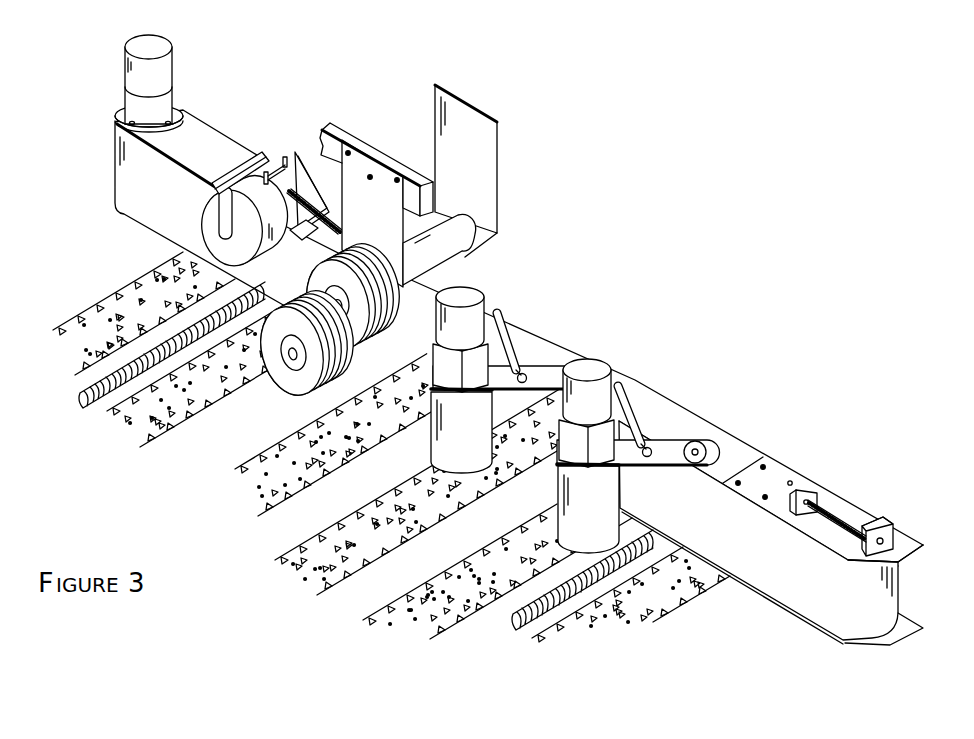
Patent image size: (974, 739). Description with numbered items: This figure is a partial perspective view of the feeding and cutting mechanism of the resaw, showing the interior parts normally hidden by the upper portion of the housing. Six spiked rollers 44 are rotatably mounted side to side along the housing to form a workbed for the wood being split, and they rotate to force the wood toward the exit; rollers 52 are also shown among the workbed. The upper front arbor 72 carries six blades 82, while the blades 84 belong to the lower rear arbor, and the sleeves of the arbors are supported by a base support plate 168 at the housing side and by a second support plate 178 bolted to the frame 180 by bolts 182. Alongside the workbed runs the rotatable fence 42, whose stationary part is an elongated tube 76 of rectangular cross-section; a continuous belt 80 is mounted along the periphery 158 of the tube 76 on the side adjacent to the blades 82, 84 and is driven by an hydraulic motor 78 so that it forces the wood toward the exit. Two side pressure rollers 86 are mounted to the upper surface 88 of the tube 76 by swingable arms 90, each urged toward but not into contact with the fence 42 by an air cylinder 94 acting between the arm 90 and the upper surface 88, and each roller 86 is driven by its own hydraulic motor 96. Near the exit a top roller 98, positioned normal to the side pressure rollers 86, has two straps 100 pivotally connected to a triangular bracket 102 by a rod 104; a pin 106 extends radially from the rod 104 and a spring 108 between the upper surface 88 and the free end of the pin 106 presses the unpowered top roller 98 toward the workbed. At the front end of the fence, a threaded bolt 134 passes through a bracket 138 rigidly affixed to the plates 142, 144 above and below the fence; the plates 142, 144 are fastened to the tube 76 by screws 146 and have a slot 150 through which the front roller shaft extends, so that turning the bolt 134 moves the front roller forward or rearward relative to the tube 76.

The rotatable fence 42 is at (140, 183).
The spiked rollers 44 is at (105, 306).
The belt rollers 52 is at (89, 403).
The upper front arbor 72 is at (446, 258).
The elongated tube 76 is at (668, 415).
The hydraulic motor 78 is at (170, 60).
The continuous belt 80 is at (843, 618).
The blades 82 is at (363, 340).
The blades 84 is at (305, 382).
The side pressure rollers 86 is at (447, 437).
The upper surface 88 is at (545, 338).
The swingable arms 90 is at (530, 362).
The air cylinder 94 is at (498, 316).
The hydraulic motor 96 is at (605, 377).
The top roller 98 is at (212, 220).
The straps 100 is at (257, 160).
The triangular bracket 102 is at (262, 165).
The rod 104 is at (240, 176).
The pin 106 is at (295, 150).
The spring 108 is at (298, 232).
The threaded bolt 134 is at (838, 516).
The bracket 138 is at (815, 498).
The plate 142 is at (907, 542).
The plate 144 is at (907, 623).
The screws 146 is at (792, 480).
The slot 150 is at (868, 527).
The periphery 158 is at (578, 343).
The base support plate 168 is at (499, 166).
The second support plate 178 is at (387, 170).
The frame 180 is at (333, 118).
The bolts 182 is at (369, 174).